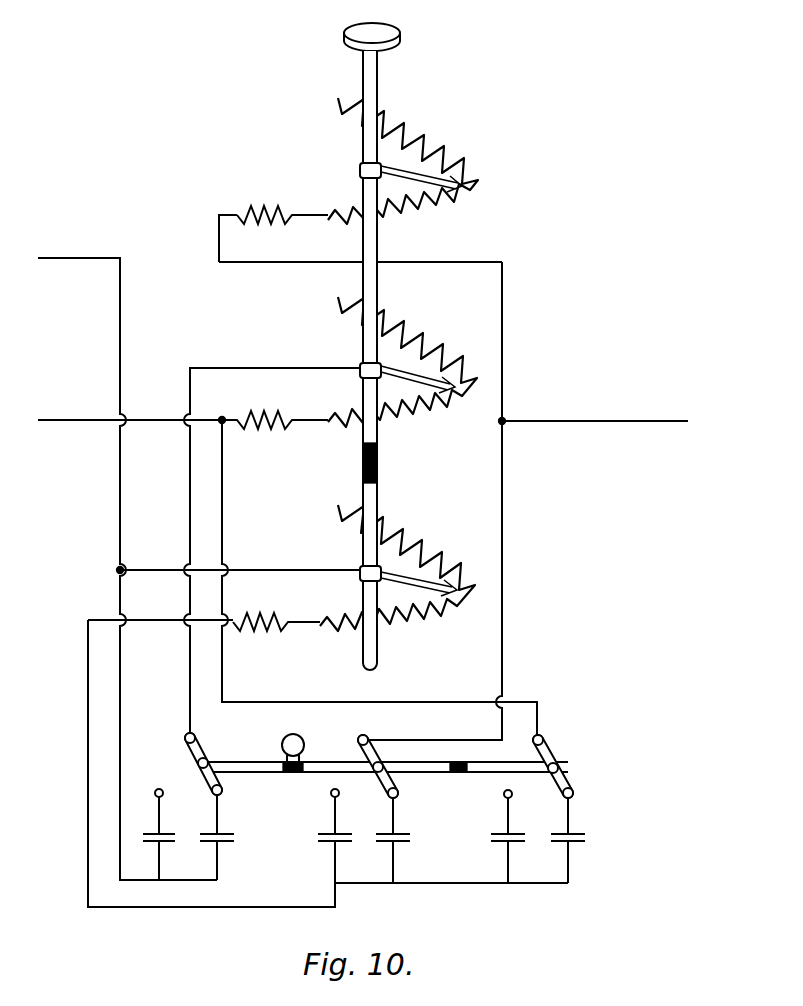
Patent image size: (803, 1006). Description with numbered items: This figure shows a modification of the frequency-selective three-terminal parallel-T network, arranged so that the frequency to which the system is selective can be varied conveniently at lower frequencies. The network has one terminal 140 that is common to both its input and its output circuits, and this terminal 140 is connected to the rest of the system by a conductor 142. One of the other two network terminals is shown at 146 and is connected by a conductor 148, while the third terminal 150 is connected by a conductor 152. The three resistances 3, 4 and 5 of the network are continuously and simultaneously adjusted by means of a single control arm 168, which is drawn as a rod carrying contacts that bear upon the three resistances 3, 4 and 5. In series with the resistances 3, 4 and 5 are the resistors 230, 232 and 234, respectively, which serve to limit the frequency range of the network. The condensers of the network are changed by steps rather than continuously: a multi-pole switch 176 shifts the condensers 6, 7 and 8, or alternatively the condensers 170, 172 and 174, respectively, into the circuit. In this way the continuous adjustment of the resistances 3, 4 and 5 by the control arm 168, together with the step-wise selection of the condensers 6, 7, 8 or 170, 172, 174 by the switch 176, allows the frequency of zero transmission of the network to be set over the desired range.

The resistance 3 is at (432, 312).
The resistance 4 is at (475, 137).
The resistance 5 is at (453, 528).
The condenser 6 is at (575, 830).
The condenser 7 is at (400, 835).
The condenser 8 is at (225, 830).
The terminal 140 is at (118, 570).
The conductor 142 is at (125, 322).
The terminal 146 is at (505, 421).
The conductor 148 is at (617, 420).
The terminal 150 is at (228, 412).
The conductor 152 is at (68, 422).
The control arm 168 is at (378, 247).
The condenser 170 is at (493, 832).
The condenser 172 is at (330, 843).
The condenser 174 is at (143, 833).
The multi-pole switch 176 is at (318, 758).
The resistor 230 is at (262, 432).
The resistor 232 is at (268, 212).
The resistor 234 is at (260, 634).